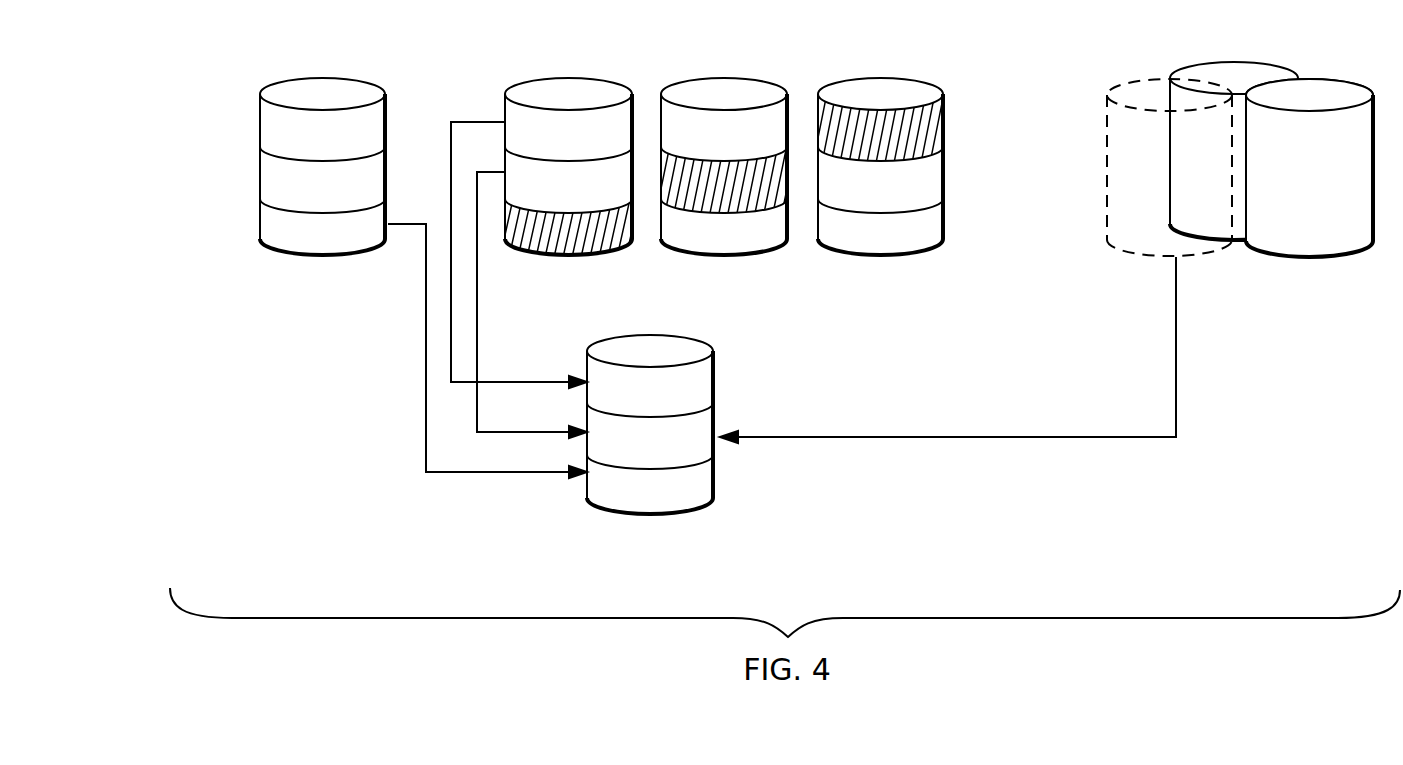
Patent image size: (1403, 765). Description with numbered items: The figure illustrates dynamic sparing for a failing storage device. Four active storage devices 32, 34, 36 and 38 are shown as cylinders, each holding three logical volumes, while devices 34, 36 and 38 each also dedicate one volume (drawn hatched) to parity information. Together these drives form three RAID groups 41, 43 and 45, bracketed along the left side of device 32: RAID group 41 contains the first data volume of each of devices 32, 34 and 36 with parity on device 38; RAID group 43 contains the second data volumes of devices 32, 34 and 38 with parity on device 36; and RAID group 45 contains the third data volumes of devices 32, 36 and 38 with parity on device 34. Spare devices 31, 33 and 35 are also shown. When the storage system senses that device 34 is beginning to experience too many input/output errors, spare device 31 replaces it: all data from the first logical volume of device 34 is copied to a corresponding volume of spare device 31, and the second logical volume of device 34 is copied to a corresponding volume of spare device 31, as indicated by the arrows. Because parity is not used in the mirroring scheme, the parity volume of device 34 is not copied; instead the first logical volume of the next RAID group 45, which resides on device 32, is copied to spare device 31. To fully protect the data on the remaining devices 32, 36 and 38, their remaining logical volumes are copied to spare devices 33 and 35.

The spare device 31 is at (712, 345).
The storage device 32 is at (337, 77).
The spare device 33 is at (1325, 77).
The storage device 34 is at (595, 77).
The spare device 35 is at (1223, 60).
The storage device 36 is at (758, 77).
The storage device 38 is at (908, 77).
The RAID group 41 is at (251, 90).
The RAID group 43 is at (251, 143).
The RAID group 45 is at (251, 198).